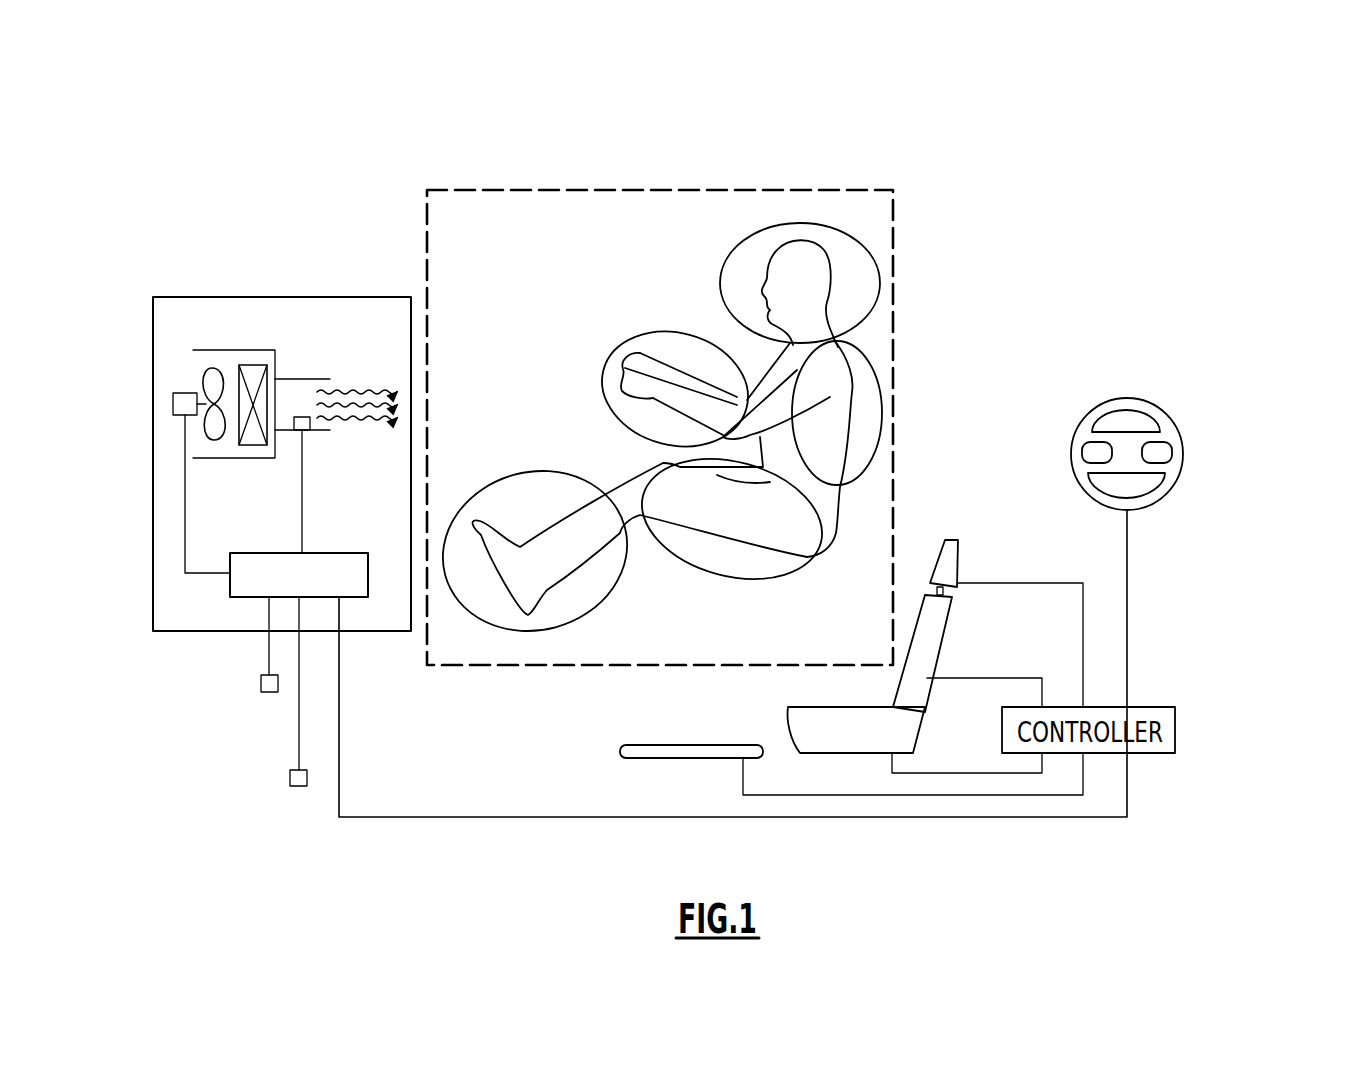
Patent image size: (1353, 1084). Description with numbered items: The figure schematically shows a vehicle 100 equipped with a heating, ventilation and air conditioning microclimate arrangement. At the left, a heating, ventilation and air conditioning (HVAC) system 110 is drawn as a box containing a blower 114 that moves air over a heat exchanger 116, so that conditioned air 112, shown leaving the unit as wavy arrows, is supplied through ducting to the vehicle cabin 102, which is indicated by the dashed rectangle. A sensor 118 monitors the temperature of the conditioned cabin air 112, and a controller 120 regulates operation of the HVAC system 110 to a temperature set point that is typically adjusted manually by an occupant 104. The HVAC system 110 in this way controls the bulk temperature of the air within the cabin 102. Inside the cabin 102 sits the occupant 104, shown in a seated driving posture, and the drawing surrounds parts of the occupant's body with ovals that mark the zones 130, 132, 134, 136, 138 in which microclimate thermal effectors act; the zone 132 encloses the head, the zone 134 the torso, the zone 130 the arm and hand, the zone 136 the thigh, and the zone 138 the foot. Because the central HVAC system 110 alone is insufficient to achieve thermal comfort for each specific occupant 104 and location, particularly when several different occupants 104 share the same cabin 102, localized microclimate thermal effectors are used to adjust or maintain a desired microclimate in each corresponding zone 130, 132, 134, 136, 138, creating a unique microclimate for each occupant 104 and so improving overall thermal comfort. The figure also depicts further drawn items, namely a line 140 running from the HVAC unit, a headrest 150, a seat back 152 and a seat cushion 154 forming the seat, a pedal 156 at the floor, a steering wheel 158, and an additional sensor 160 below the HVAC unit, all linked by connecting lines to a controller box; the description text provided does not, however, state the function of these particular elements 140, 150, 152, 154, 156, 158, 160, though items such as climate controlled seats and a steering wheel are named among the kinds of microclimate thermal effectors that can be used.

The vehicle 100 is at (314, 120).
The vehicle cabin 102 is at (520, 190).
The occupant 104 is at (805, 268).
The heating, ventilation and air conditioning (HVAC) system 110 is at (232, 297).
The conditioned air 112 is at (370, 392).
The blower 114 is at (218, 368).
The heat exchanger 116 is at (255, 445).
The sensor 118 is at (309, 428).
The controller 120 is at (337, 553).
The zone 130 is at (638, 335).
The zone 132 is at (742, 240).
The zone 134 is at (873, 372).
The zone 136 is at (742, 582).
The zone 138 is at (552, 472).
The communication line 140 is at (340, 708).
The headrest 150 is at (958, 547).
The seat back 152 is at (945, 636).
The seat cushion 154 is at (878, 745).
The pedal 156 is at (668, 742).
The steering wheel 158 is at (1177, 425).
The sensor 160 is at (282, 793).